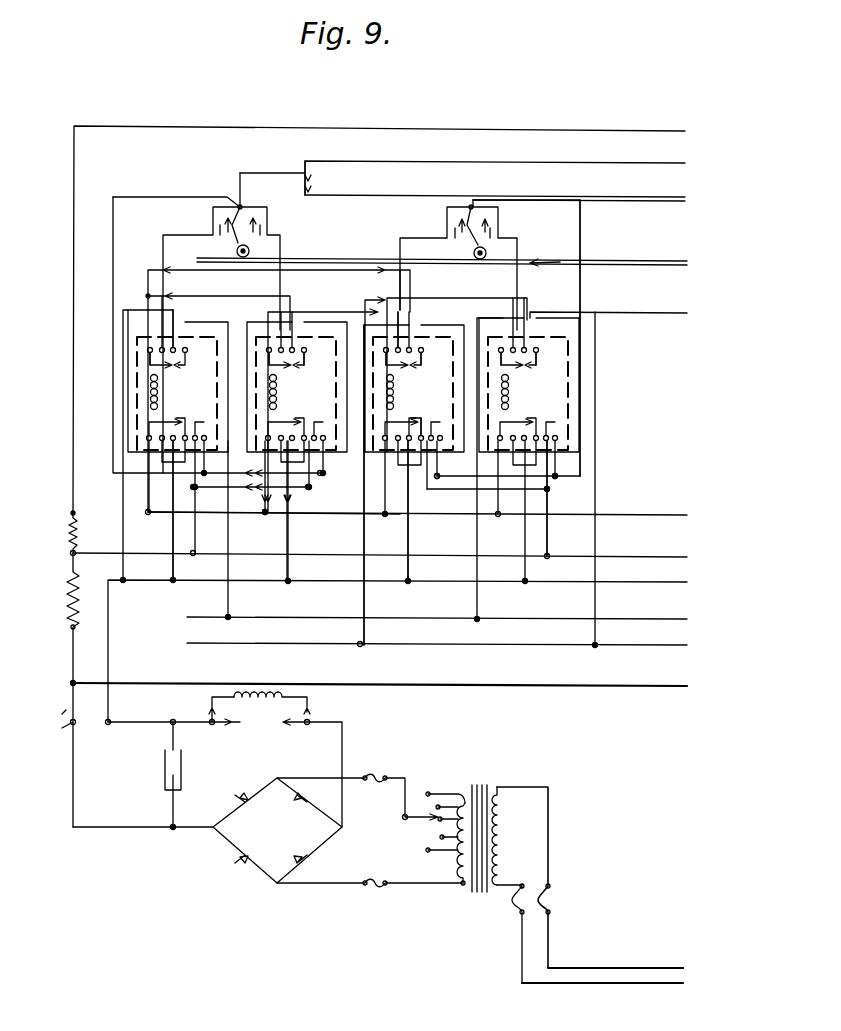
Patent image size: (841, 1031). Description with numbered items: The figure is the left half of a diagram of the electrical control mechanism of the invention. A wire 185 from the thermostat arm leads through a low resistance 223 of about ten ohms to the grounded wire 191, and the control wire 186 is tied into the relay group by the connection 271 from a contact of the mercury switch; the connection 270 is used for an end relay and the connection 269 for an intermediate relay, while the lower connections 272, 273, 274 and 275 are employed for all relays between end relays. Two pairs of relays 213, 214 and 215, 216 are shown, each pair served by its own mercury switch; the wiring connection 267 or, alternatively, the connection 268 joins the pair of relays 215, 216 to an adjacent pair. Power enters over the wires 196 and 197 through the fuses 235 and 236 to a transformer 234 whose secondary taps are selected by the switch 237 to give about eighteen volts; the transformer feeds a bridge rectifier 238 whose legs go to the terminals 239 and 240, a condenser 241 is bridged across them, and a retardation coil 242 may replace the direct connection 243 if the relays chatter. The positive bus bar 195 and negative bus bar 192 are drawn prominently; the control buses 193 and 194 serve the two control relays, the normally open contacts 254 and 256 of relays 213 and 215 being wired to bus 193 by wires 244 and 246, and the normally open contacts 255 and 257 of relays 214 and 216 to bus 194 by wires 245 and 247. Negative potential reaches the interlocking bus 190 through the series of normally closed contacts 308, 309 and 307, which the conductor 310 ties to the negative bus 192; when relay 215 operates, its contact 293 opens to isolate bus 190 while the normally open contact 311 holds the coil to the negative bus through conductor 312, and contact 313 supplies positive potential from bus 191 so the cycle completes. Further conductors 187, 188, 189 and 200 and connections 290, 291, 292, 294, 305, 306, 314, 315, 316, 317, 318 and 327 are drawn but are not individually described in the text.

The wire 185 is at (664, 130).
The control wire 186 is at (676, 162).
The bus 187 is at (676, 196).
The bus 188 is at (660, 203).
The bus 189 is at (652, 312).
The interlocking bus 190 is at (628, 514).
The grounded wire 191 is at (628, 556).
The negative bus bar 192 is at (630, 582).
The control bus 193 is at (668, 618).
The control bus 194 is at (660, 645).
The positive bus bar 195 is at (660, 685).
The wire 196 is at (626, 967).
The wire 197 is at (622, 986).
The bus 200 is at (662, 259).
The relay 213 is at (178, 438).
The relay 214 is at (297, 446).
The relay 215 is at (414, 446).
The relay 216 is at (529, 439).
The low resistance 223 is at (70, 530).
The transformer 234 is at (486, 782).
The fuse 235 is at (516, 904).
The fuse 236 is at (552, 900).
The switch 237 is at (414, 815).
The bridge rectifier 238 is at (288, 846).
The terminal 239 is at (64, 730).
The terminal 240 is at (108, 726).
The condenser 241 is at (184, 778).
The retardation coil 242 is at (258, 706).
The direct connection 243 is at (282, 725).
The wire 244 is at (230, 602).
The wire 245 is at (368, 604).
The wire 246 is at (488, 314).
The wire 247 is at (598, 604).
The normally open contact 254 is at (188, 345).
The normally open contact 255 is at (305, 362).
The normally open contact 256 is at (418, 364).
The normally open contact 257 is at (538, 362).
The wiring connection 267 is at (328, 312).
The connection 268 is at (343, 269).
The connection 269 is at (315, 183).
The connection 270 is at (307, 174).
The connection 271 is at (244, 206).
The connection 272 is at (255, 471).
The connection 273 is at (255, 490).
The connection 274 is at (270, 505).
The connection 275 is at (292, 502).
The relay 290 is at (468, 208).
The conductor 291 is at (452, 228).
The conductor 292 is at (388, 298).
The normally closed contact 293 is at (435, 415).
The conductor 294 is at (360, 504).
The contact 305 is at (144, 365).
The conductor 306 is at (470, 295).
The normally closed contact 307 is at (384, 348).
The normally closed contact 308 is at (506, 364).
The normally closed contact 309 is at (262, 362).
The conductor 310 is at (148, 300).
The normally open contact 311 is at (374, 428).
The conductor 312 is at (412, 537).
The normally open contact 313 is at (432, 430).
The conductor 314 is at (549, 537).
The conductor 315 is at (440, 490).
The conductor 316 is at (452, 476).
The conductor 317 is at (582, 292).
The contact 318 is at (410, 355).
The arrow 327 is at (556, 256).